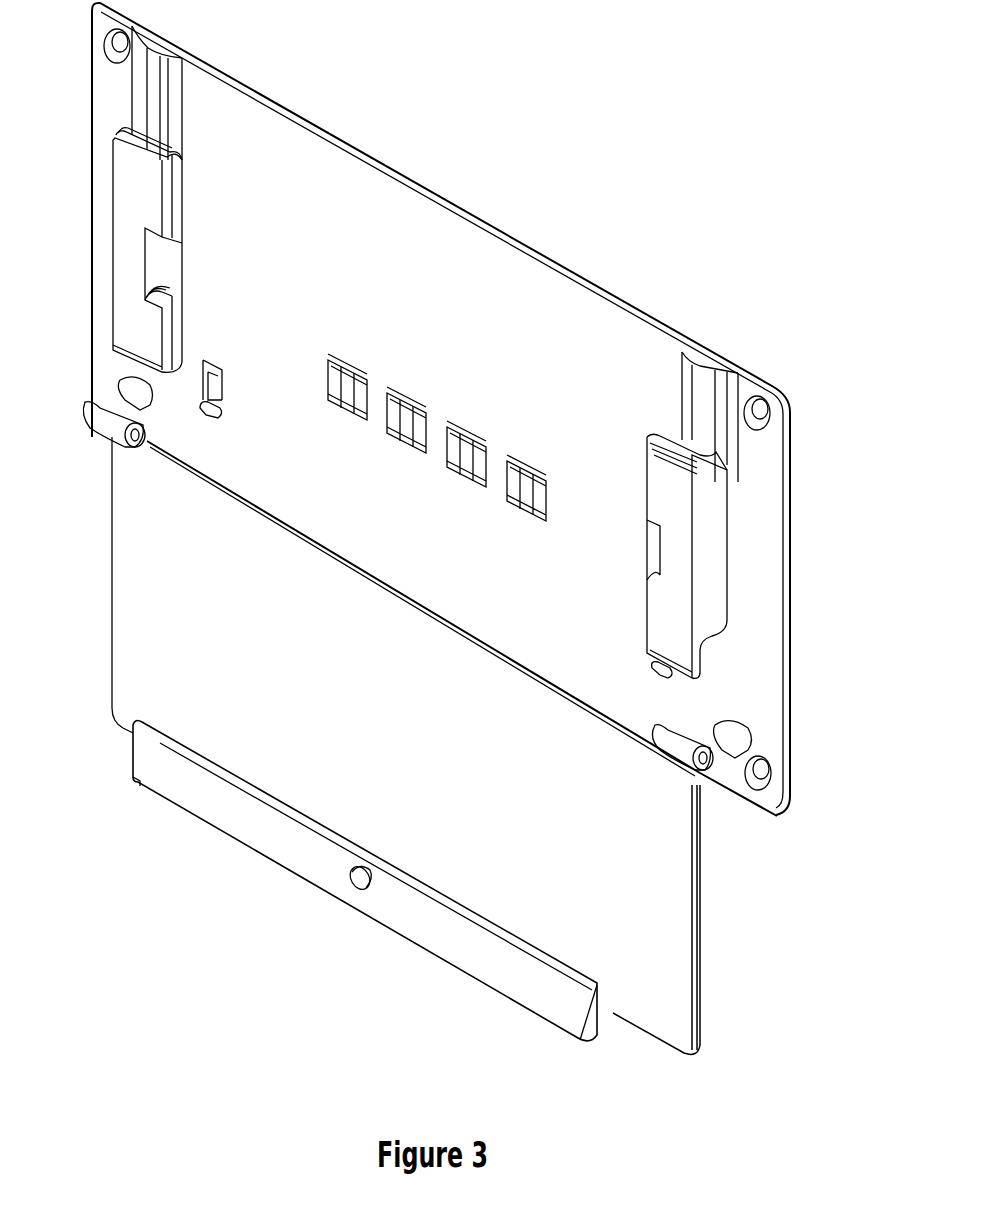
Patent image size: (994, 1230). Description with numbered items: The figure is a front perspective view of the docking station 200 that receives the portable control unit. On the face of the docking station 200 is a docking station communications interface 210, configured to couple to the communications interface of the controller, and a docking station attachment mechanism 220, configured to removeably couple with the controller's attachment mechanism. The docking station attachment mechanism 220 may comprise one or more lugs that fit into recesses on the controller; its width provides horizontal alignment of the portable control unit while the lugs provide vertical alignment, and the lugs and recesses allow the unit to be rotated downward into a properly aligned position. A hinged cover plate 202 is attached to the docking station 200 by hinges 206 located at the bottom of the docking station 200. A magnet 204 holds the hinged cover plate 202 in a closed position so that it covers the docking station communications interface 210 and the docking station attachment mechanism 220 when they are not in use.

The docking station 200 is at (492, 226).
The hinged cover plate 202 is at (702, 1032).
The magnet 204 is at (353, 892).
The hinges 206 is at (703, 775).
The docking station communications interface 210 is at (460, 477).
The docking station attachment mechanism 220 is at (182, 207).